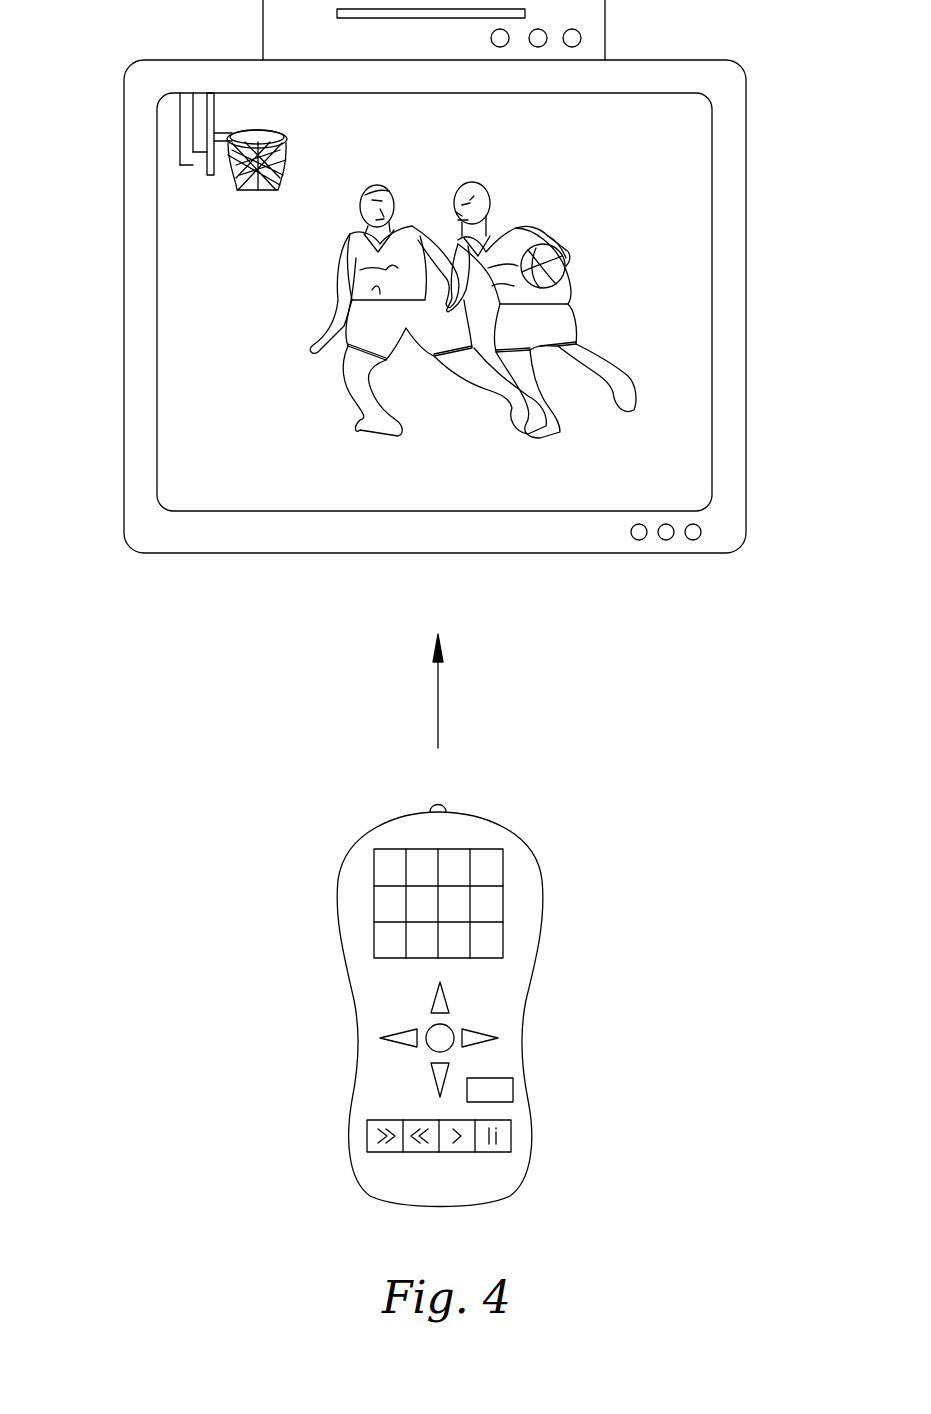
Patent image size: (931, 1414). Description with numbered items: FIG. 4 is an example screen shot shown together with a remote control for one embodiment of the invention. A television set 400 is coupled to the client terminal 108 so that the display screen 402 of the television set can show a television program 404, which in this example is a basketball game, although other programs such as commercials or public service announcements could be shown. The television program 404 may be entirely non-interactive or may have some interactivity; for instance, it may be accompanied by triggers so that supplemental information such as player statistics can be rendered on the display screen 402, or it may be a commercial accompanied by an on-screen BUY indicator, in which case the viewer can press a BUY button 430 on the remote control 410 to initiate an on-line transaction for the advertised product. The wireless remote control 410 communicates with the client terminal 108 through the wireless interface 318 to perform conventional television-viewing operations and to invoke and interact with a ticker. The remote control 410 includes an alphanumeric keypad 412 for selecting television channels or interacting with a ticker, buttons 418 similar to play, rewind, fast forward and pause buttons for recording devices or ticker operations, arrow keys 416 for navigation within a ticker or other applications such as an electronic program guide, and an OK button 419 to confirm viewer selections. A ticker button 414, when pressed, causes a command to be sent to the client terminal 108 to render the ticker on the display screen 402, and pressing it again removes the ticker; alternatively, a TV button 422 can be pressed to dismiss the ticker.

The client terminal 108 is at (263, 14).
The wireless interface 318 is at (581, 38).
The television set 400 is at (142, 89).
The display screen 402 is at (712, 163).
The television program 404 is at (620, 274).
The remote control 410 is at (381, 830).
The alphanumeric keypad 412 is at (374, 900).
The ticker button 414 is at (503, 942).
The arrow keys 416 is at (472, 1018).
The buttons 418 is at (520, 1132).
The OK button 419 is at (430, 1048).
The TV button 422 is at (460, 958).
The BUY button 430 is at (513, 1090).